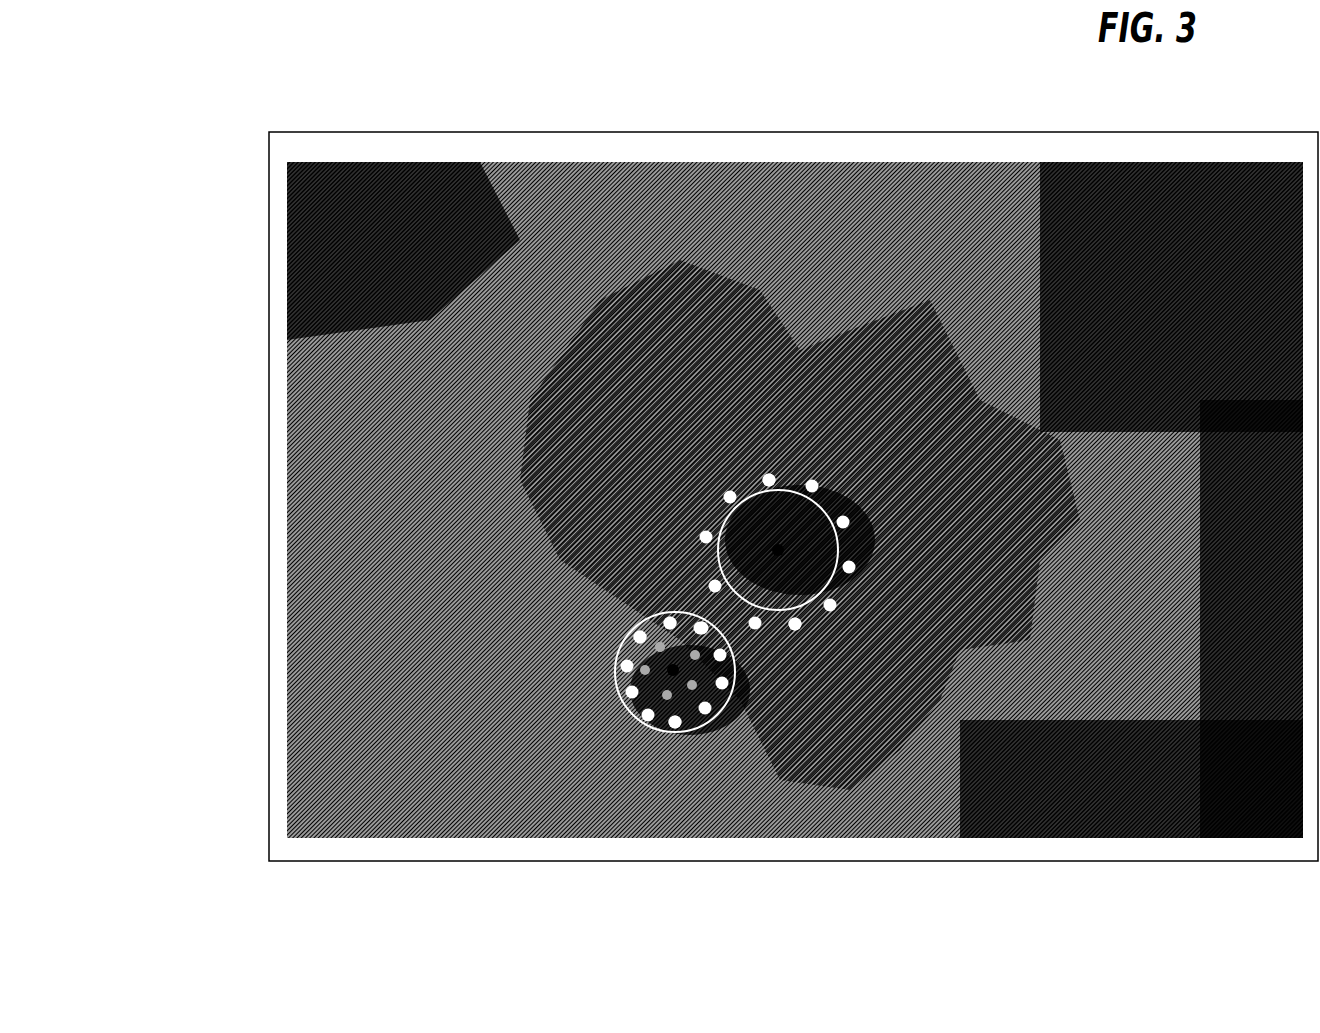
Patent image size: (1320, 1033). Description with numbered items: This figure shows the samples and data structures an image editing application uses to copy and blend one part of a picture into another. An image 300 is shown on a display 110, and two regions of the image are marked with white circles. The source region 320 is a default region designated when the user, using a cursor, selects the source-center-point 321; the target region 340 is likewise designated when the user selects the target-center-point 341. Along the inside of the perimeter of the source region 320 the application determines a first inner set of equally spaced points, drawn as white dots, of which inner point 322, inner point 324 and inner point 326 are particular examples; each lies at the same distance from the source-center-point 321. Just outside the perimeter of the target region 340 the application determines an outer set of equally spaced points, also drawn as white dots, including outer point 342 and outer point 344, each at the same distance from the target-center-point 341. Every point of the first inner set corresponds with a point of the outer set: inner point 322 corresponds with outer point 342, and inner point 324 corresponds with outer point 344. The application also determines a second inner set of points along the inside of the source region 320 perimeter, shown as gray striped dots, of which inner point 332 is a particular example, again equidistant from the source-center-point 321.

The display 110 is at (524, 122).
The image 300 is at (798, 155).
The target region 340 is at (700, 522).
The target-center-point 341 is at (778, 550).
The outer point 342 is at (769, 476).
The outer point 344 is at (797, 628).
The source region 320 is at (604, 657).
The source-center-point 321 is at (673, 670).
The inner point 322 is at (660, 645).
The inner point 324 is at (678, 726).
The inner point 326 is at (638, 636).
The inner point 332 is at (668, 621).